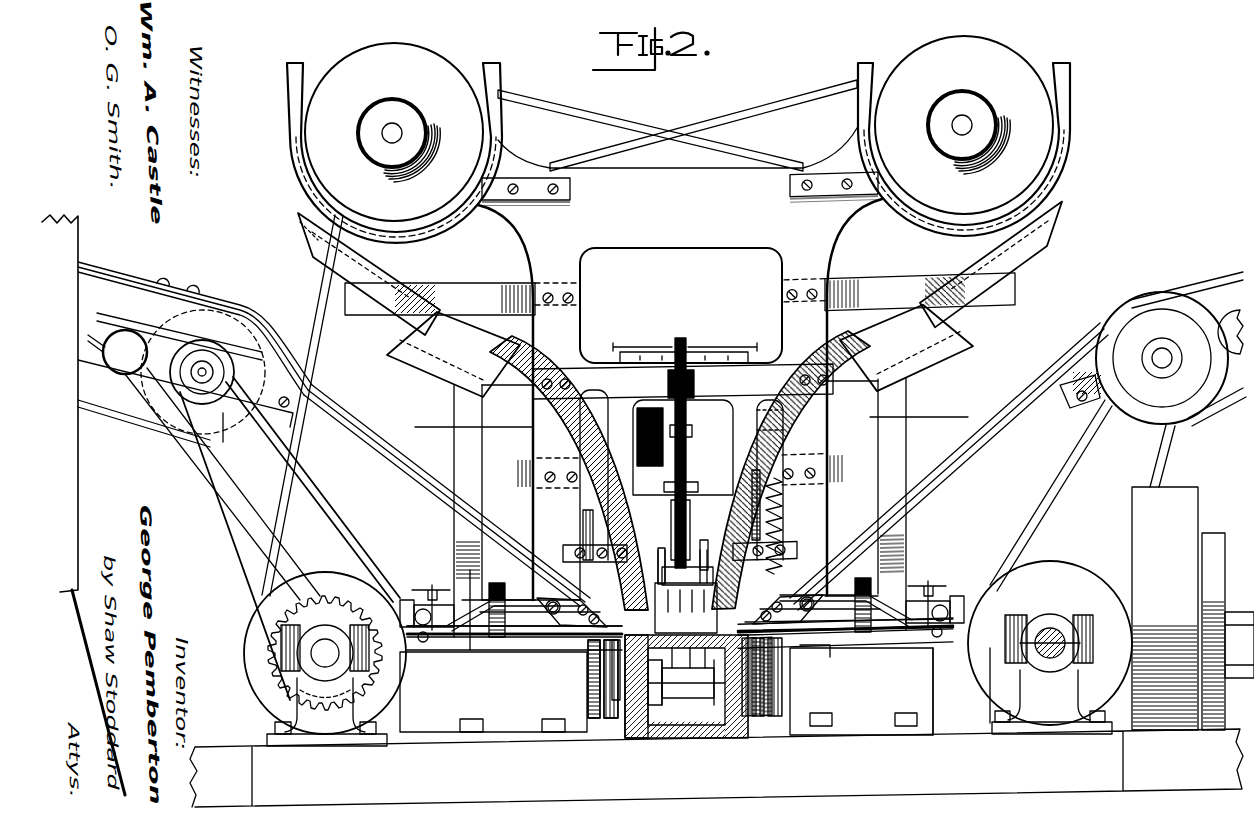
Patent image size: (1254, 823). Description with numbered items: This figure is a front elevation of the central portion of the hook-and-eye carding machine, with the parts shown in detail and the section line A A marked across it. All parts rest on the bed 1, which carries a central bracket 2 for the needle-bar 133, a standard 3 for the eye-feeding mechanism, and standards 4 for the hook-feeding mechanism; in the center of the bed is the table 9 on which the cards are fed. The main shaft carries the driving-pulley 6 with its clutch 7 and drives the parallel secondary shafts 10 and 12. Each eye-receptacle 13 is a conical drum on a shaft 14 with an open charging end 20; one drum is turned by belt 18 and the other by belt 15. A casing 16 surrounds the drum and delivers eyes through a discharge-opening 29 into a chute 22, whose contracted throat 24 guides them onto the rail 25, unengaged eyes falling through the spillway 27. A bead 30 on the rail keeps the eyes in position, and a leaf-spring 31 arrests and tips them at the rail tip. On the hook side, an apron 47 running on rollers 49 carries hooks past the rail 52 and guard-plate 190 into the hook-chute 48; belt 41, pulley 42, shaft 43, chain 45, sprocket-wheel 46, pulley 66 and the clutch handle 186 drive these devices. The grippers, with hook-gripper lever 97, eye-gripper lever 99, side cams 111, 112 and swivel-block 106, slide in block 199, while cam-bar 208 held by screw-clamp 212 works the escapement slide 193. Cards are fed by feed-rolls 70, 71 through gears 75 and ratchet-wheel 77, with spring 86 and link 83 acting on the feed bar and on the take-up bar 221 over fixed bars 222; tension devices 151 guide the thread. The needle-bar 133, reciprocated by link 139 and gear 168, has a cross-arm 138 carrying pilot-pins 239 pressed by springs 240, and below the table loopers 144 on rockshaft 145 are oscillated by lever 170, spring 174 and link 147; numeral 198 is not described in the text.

The bed 1 is at (605, 705).
The central bracket 2 is at (683, 381).
The standard 3 is at (582, 334).
The standard 4 is at (67, 486).
The driving-pulley 6 is at (1198, 512).
The clutch 7 is at (1207, 538).
The table 9 is at (648, 738).
The shaft 10 is at (1052, 638).
The shaft 12 is at (325, 648).
The eye-receptacle 13 is at (445, 55).
The shaft 14 is at (391, 137).
The belt 15 is at (594, 112).
The casing 16 is at (493, 113).
The belt 18 is at (325, 334).
The open end 20 is at (422, 110).
The chute 22 is at (380, 272).
The contracted throat 24 is at (414, 297).
The rail 25 is at (520, 405).
The spillway 27 is at (680, 350).
The discharge-opening 29 is at (316, 253).
The bead 30 is at (504, 382).
The leaf-spring 31 is at (680, 611).
The belt 41 is at (150, 328).
The pulley 42 is at (214, 342).
The shaft 43 is at (200, 376).
The chain 45 is at (238, 581).
The sprocket-wheel 46 is at (290, 595).
The apron 47 is at (133, 421).
The hook-chute 48 is at (352, 420).
The roller 49 is at (734, 437).
The rail 52 is at (145, 283).
The pulley 66 is at (1116, 320).
The lower feed-roll 70 is at (636, 722).
The upper feed-roll 71 is at (686, 591).
The gear 75 is at (762, 725).
The ratchet-wheel 77 is at (782, 692).
The link 83 is at (784, 504).
The spring 86 is at (760, 420).
The hook-gripper lever 97 is at (512, 640).
The eye-gripper lever 99 is at (588, 640).
The swivel-block 106 is at (404, 598).
The side cam 111 is at (248, 664).
The side cam 112 is at (1094, 582).
The needle-bar 133 is at (688, 432).
The cross-arm 138 is at (702, 546).
The link 139 is at (586, 516).
The looper 144 is at (712, 722).
The rockshaft 145 is at (706, 662).
The link 147 is at (620, 702).
The thread-guiding and tension device 151 is at (702, 346).
The gear 168 is at (498, 583).
The lever 170 is at (598, 712).
The spring 174 is at (592, 690).
The handle 186 is at (124, 366).
The guard-plate 190 is at (200, 293).
The slide 193 is at (552, 640).
The lever 198 is at (838, 662).
The block 199 is at (441, 696).
The cam-bar 208 is at (508, 642).
The screw-clamp 212 is at (432, 584).
The take-up bar 221 is at (640, 351).
The fixed bar 222 is at (766, 351).
The pilot-pin 239 is at (800, 530).
The spring 240 is at (650, 552).
The section line A A is at (686, 423).